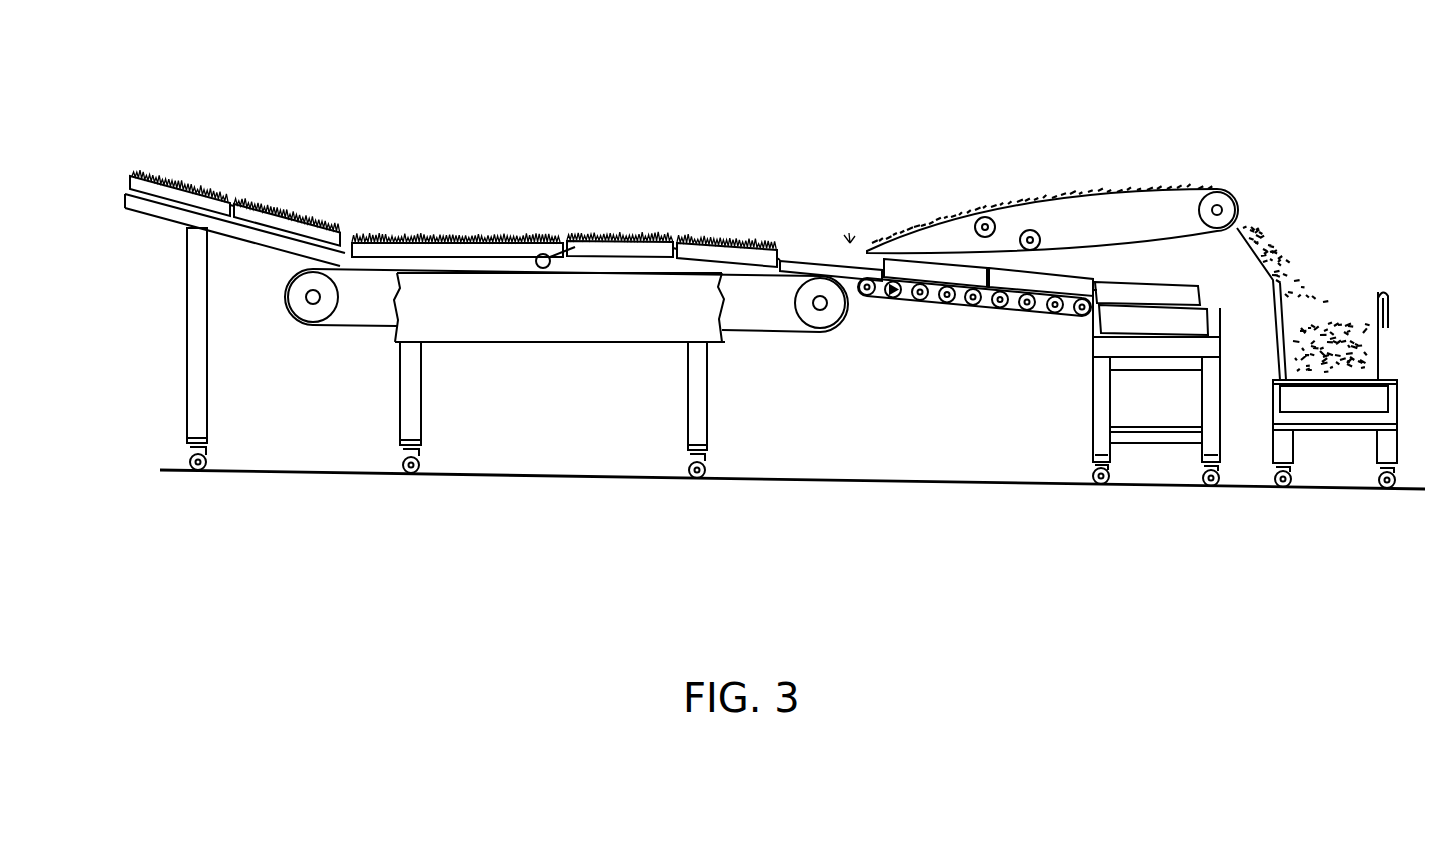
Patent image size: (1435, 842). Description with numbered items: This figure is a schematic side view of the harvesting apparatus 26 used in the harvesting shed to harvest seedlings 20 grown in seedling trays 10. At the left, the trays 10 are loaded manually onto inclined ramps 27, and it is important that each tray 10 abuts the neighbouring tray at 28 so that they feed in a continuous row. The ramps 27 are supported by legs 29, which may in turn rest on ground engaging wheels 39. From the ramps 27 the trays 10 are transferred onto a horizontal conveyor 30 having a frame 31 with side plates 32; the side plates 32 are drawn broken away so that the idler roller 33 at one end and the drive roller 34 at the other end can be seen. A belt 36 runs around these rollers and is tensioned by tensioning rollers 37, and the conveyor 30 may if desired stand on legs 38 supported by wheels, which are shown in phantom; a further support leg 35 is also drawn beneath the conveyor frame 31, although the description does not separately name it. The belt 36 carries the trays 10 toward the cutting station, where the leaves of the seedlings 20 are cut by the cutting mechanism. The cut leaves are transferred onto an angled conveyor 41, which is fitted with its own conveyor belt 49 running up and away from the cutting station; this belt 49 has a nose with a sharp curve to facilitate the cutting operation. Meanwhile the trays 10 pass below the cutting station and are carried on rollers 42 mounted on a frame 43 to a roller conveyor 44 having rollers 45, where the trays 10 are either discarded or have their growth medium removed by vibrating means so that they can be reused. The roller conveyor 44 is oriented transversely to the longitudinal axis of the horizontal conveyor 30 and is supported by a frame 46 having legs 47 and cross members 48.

The seedling tray 10 is at (176, 184).
The seedling 20 is at (160, 174).
The harvesting apparatus 26 is at (661, 201).
The ramp 27 is at (140, 212).
The tray abutment 28 is at (232, 216).
The leg 29 is at (189, 372).
The horizontal conveyor 30 is at (572, 342).
The frame 31 is at (570, 351).
The side plate 32 is at (670, 324).
The idler roller 33 is at (303, 306).
The drive roller 34 is at (832, 316).
The support leg 35 is at (688, 413).
The belt 36 is at (763, 338).
The tensioning roller 37 is at (575, 247).
The leg 38 is at (406, 473).
The ground engaging wheel 39 is at (207, 471).
The angled conveyor 41 is at (1052, 165).
The roller 42 is at (974, 355).
The frame 43 is at (960, 303).
The roller conveyor 44 is at (1226, 421).
The roller 45 is at (1132, 322).
The frame 46 is at (1117, 428).
The leg 47 is at (1213, 455).
The cross member 48 is at (1167, 360).
The conveyor belt 49 is at (1183, 233).